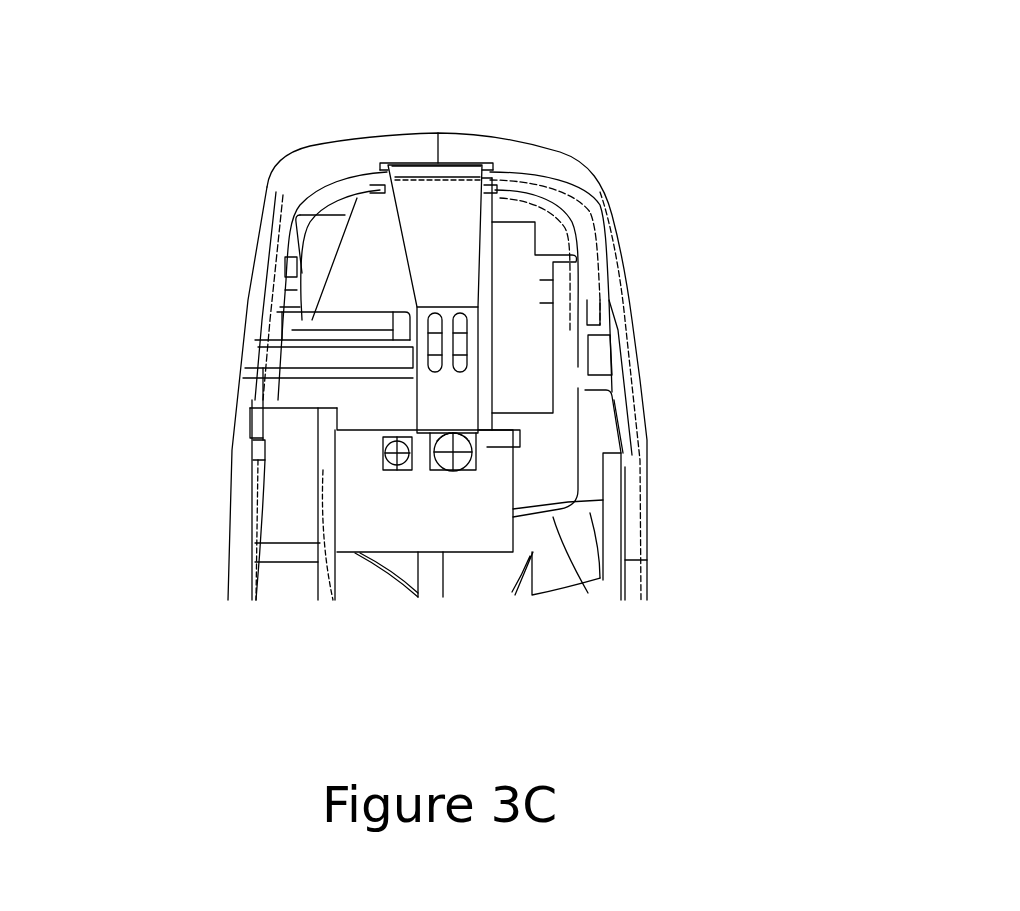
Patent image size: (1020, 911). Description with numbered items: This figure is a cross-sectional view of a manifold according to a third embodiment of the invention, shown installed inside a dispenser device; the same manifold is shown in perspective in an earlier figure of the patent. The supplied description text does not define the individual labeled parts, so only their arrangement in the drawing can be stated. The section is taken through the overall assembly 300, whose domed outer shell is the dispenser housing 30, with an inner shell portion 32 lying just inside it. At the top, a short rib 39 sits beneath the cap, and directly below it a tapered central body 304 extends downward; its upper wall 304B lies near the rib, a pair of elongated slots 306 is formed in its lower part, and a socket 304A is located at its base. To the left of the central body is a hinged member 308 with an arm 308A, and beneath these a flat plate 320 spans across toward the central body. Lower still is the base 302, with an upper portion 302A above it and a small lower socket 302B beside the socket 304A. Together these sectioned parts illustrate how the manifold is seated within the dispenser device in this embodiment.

The assembly 300 is at (415, 150).
The rib 39 is at (456, 160).
The bracket top wall 304B is at (460, 175).
The bracket 304 is at (455, 272).
The slots 306 is at (433, 362).
The housing 30 is at (627, 400).
The socket 304A is at (445, 460).
The hinge 308 is at (348, 323).
The housing inner shell 32 is at (257, 323).
The hinge arm 308A is at (283, 333).
The plate 320 is at (255, 370).
The base upper portion 302A is at (257, 385).
The base 302 is at (292, 398).
The base lower socket 302B is at (383, 450).